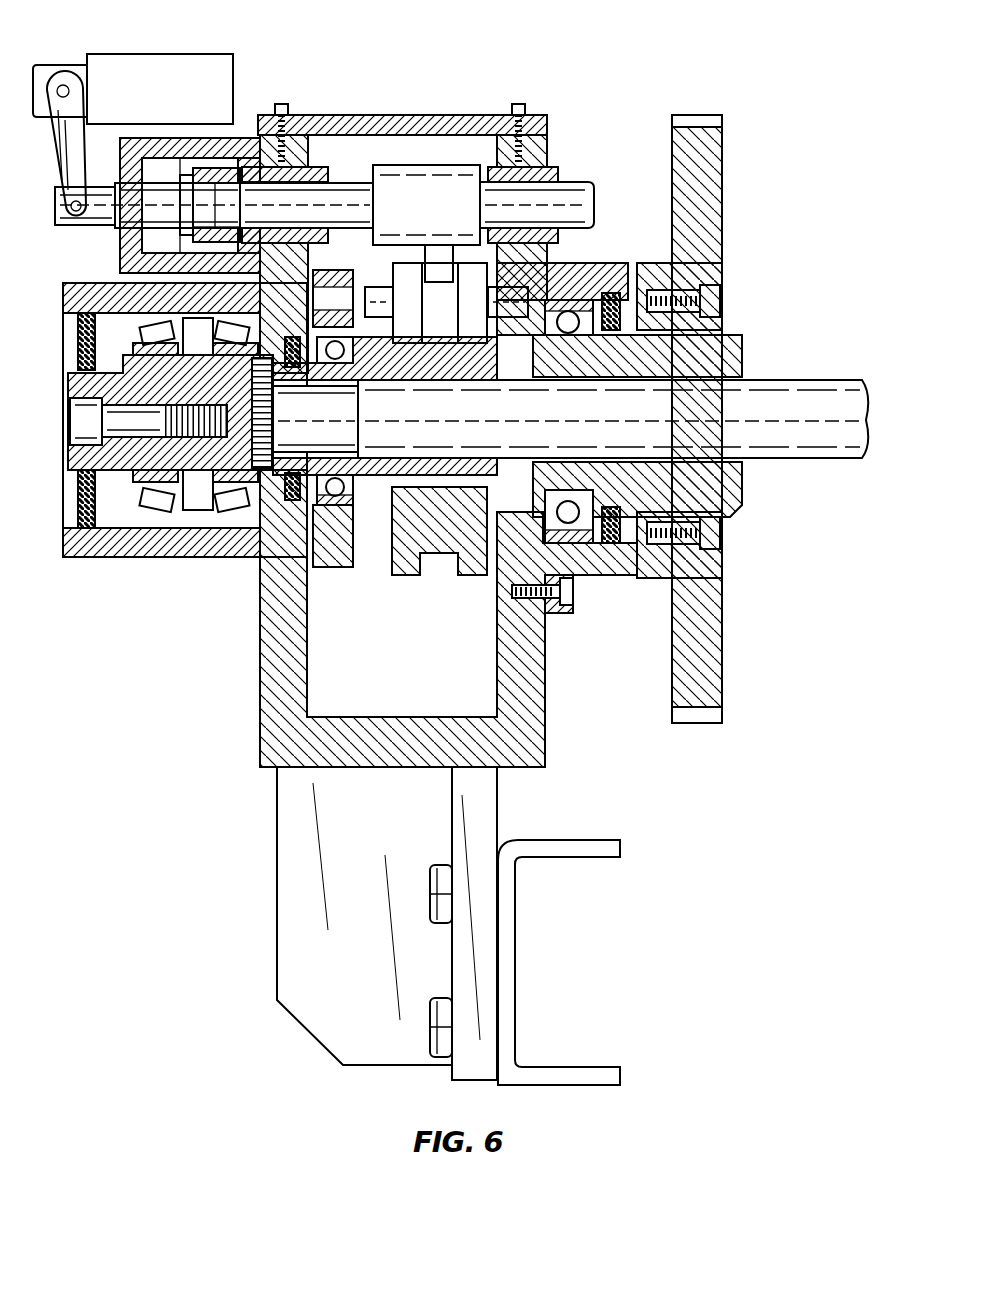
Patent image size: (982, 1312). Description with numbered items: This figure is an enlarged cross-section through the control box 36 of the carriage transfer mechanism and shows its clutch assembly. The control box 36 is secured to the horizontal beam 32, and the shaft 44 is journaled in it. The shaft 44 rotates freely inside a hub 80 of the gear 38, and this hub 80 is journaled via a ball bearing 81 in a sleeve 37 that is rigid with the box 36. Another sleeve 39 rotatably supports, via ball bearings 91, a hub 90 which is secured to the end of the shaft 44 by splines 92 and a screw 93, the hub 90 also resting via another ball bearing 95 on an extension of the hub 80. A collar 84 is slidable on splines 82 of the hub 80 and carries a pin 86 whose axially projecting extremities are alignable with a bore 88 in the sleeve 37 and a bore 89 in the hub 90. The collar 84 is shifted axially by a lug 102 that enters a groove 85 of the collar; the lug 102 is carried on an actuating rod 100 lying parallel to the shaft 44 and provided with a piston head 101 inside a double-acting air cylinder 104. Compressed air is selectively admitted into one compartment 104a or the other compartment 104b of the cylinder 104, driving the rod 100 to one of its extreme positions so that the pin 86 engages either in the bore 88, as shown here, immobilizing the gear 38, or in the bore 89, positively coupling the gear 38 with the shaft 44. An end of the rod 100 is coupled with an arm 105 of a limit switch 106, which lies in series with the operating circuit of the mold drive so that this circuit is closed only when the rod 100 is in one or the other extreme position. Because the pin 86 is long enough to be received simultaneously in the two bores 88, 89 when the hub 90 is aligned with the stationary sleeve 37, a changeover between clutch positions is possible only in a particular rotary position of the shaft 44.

The limit switch 106 is at (184, 54).
The arm 105 is at (63, 138).
The double-acting air cylinder 104 is at (122, 246).
The compartment 104a is at (150, 170).
The piston head 101 is at (208, 170).
The compartment 104b is at (237, 170).
The lug 102 is at (430, 233).
The actuating rod 100 is at (585, 182).
The pin 86 is at (377, 293).
The bore 89 is at (333, 293).
The splines 82 is at (375, 362).
The bore 88 is at (523, 333).
The sleeve 37 is at (568, 263).
The hub 80 is at (733, 345).
The shaft 44 is at (805, 452).
The sleeve 39 is at (105, 545).
The splines 92 is at (290, 407).
The screw 93 is at (75, 418).
The ball bearings 91 is at (213, 528).
The hub 90 is at (333, 567).
The ball bearing 95 is at (352, 495).
The collar 84 is at (408, 565).
The groove 85 is at (438, 565).
The control box 36 is at (262, 742).
The ball bearing 81 is at (583, 522).
The gear 38 is at (722, 662).
The beam 32 is at (542, 848).